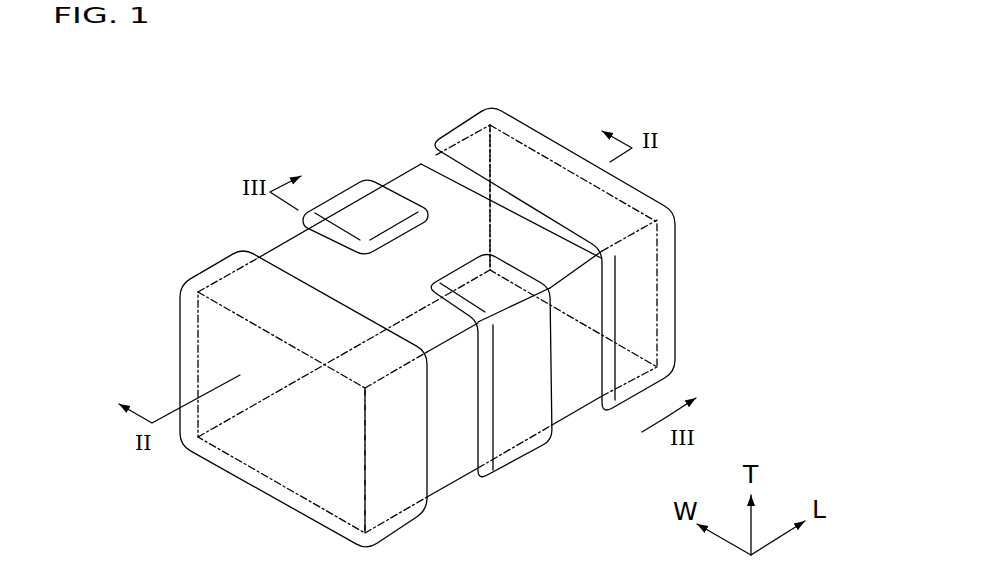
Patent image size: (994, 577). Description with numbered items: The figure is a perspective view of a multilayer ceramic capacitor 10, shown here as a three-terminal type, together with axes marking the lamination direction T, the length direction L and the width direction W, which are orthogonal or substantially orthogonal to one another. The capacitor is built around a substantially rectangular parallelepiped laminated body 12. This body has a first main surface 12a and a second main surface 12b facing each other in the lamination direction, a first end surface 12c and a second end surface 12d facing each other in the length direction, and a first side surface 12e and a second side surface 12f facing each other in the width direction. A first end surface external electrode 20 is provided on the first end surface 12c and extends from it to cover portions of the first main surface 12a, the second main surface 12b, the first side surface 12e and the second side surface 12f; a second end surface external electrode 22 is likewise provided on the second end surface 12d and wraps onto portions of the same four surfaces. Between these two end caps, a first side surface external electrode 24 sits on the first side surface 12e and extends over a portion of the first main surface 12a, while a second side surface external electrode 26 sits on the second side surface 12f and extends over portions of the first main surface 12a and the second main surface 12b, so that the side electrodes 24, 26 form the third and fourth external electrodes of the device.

The multilayer ceramic capacitor 10 is at (168, 147).
The laminated body 12 is at (452, 182).
The first main surface 12a is at (503, 214).
The second main surface 12b is at (563, 393).
The first end surface 12c is at (210, 373).
The second end surface 12d is at (640, 281).
The first side surface 12e is at (423, 187).
The second side surface 12f is at (447, 463).
The first end surface external electrode 20 is at (188, 327).
The second end surface external electrode 22 is at (637, 198).
The first side surface external electrode 24 is at (352, 192).
The second side surface external electrode 26 is at (525, 450).